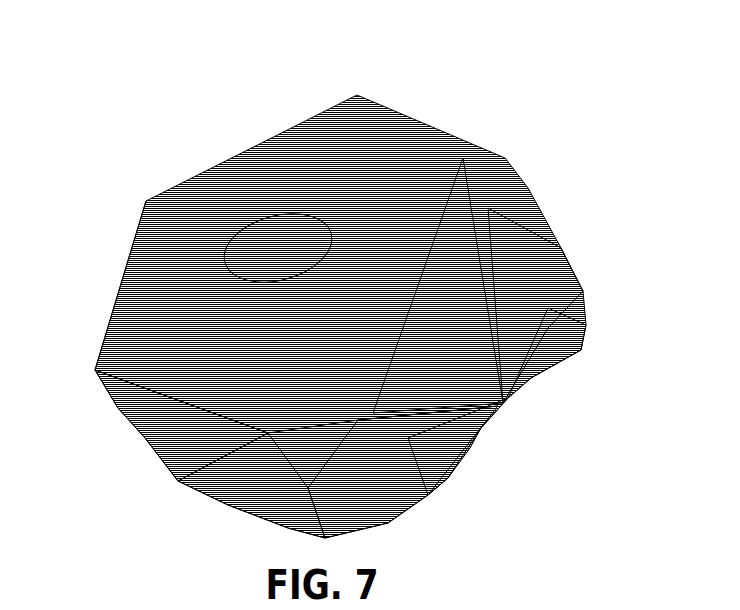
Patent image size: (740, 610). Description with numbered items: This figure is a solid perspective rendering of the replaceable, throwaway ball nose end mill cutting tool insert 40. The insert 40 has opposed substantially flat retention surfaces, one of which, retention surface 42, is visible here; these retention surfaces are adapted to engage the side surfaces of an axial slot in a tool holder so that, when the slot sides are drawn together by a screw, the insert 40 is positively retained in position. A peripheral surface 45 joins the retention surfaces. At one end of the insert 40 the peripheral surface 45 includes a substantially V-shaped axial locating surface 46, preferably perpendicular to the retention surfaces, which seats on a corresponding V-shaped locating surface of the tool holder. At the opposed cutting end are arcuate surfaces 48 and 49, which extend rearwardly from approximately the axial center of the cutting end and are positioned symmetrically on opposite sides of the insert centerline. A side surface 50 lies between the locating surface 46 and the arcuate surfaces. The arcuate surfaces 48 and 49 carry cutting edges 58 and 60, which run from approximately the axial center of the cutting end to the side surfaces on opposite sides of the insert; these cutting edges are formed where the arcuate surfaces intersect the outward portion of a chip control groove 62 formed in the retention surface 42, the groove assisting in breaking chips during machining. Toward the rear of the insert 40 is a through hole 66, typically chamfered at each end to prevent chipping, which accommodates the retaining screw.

The cutting tool insert 40 is at (441, 61).
The retention surface 42 is at (217, 183).
The peripheral surface 45 is at (137, 420).
The axial locating surface 46 is at (128, 190).
The arcuate surface 48 is at (565, 302).
The arcuate surface 49 is at (393, 468).
The side surface 50 is at (193, 447).
The cutting edge 58 is at (540, 246).
The cutting edge 60 is at (472, 430).
The chip control groove 62 is at (484, 225).
The through hole 66 is at (278, 243).